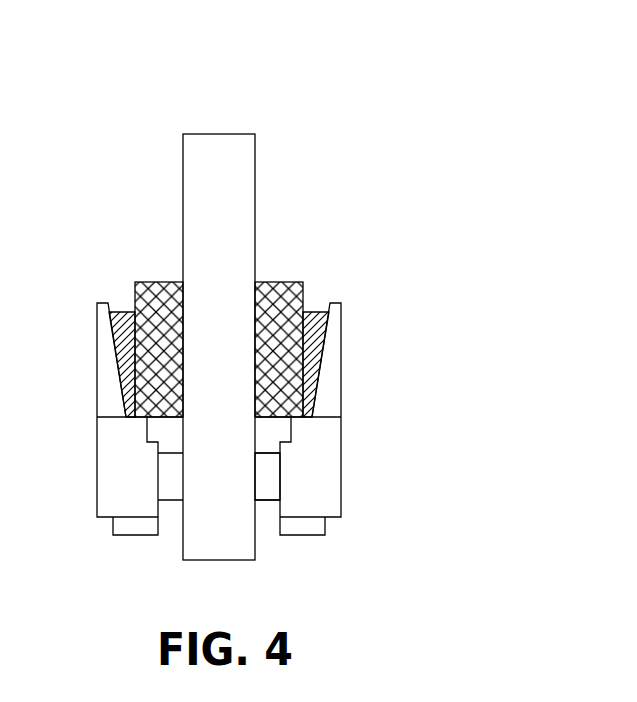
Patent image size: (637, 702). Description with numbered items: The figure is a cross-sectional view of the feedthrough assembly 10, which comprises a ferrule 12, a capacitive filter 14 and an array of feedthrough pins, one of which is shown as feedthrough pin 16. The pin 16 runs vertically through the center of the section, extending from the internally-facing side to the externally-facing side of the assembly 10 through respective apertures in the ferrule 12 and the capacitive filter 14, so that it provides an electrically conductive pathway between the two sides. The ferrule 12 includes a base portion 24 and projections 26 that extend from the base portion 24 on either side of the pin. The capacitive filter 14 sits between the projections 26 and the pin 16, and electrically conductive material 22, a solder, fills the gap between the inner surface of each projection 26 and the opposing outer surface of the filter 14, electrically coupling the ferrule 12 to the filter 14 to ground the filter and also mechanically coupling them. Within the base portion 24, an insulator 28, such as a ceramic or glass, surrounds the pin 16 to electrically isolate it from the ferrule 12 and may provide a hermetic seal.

The feedthrough assembly 10 is at (278, 68).
The ferrule 12 is at (343, 457).
The capacitive filter 14 is at (170, 280).
The feedthrough pin 16 is at (255, 226).
The electrically conductive material 22 is at (310, 306).
The base portion 24 is at (112, 478).
The projections 26 is at (110, 391).
The insulator 28 is at (267, 486).